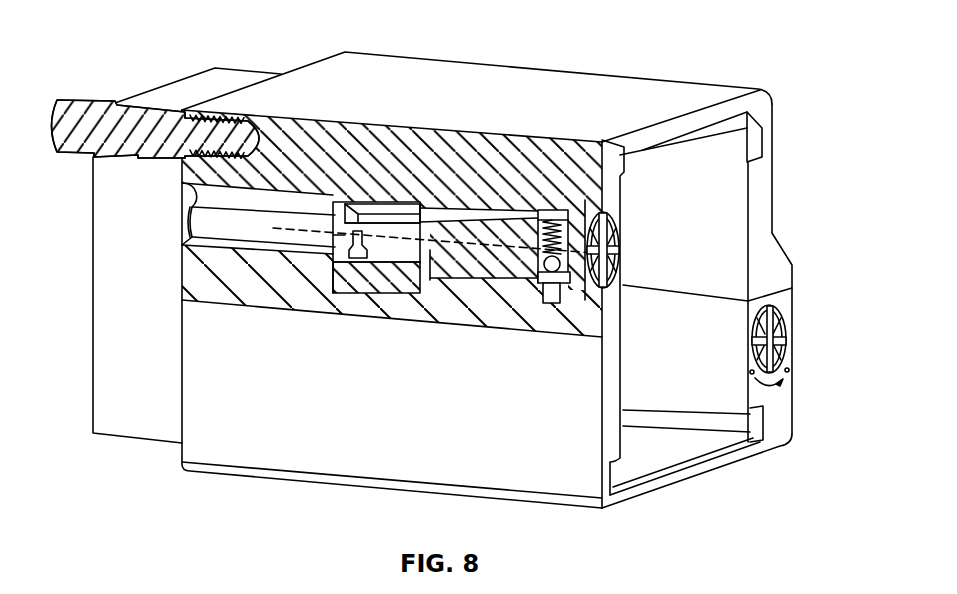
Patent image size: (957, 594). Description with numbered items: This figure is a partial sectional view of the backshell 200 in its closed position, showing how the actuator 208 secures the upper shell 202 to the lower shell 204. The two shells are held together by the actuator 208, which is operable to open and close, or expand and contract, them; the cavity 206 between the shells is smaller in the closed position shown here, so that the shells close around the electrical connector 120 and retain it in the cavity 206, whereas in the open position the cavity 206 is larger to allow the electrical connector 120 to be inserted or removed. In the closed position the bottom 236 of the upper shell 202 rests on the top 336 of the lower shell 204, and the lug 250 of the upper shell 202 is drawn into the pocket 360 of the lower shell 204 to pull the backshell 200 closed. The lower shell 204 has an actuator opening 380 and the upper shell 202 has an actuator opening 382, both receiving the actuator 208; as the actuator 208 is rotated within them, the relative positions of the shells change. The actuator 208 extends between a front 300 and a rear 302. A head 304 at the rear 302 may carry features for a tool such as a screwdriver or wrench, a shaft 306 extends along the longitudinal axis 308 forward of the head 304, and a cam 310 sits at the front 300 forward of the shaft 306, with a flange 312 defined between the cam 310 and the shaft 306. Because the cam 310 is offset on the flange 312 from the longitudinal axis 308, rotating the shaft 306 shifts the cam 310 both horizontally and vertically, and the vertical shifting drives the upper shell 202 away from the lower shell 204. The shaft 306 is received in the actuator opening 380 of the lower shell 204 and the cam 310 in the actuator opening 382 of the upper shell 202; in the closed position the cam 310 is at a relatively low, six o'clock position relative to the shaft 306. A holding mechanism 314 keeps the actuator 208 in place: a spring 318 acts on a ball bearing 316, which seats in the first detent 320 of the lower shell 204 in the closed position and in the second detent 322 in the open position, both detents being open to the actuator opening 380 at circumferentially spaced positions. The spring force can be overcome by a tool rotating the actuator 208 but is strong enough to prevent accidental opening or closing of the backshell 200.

The electrical connector 120 is at (112, 355).
The backshell 200 is at (504, 76).
The upper shell 202 is at (410, 74).
The lower shell 204 is at (278, 452).
The cavity 206 is at (726, 231).
The actuator 208 is at (553, 205).
The bottom 236 is at (183, 195).
The lug 250 is at (378, 293).
The front 300 is at (337, 247).
The rear 302 is at (613, 267).
The head 304 is at (613, 243).
The shaft 306 is at (505, 262).
The longitudinal axis 308 is at (437, 233).
The cam 310 is at (412, 286).
The flange 312 is at (368, 207).
The holding mechanism 314 is at (535, 262).
The ball bearing 316 is at (553, 300).
The spring 318 is at (605, 286).
The first detent 320 is at (550, 300).
The second detent 322 is at (587, 138).
The top 336 is at (186, 113).
The pocket 360 is at (337, 290).
The actuator opening 380 is at (467, 284).
The actuator opening 382 is at (332, 256).